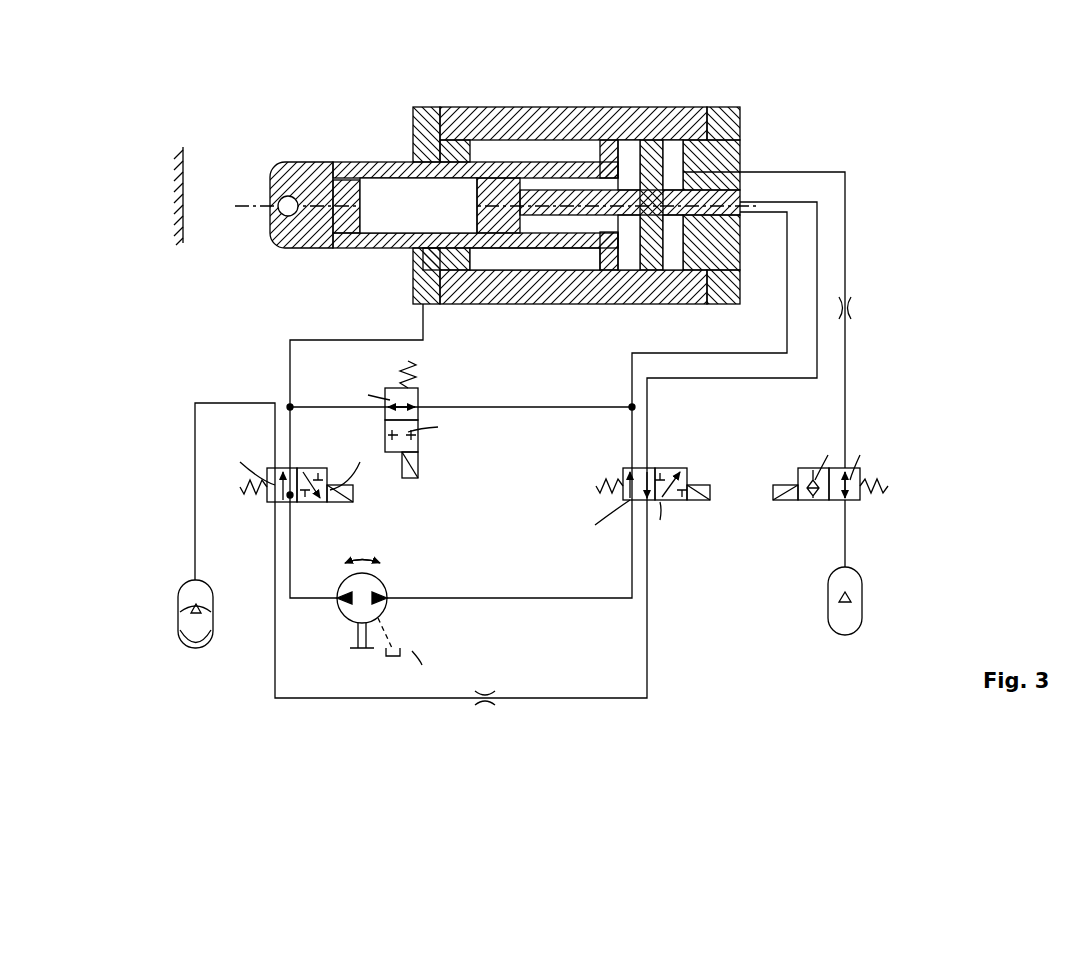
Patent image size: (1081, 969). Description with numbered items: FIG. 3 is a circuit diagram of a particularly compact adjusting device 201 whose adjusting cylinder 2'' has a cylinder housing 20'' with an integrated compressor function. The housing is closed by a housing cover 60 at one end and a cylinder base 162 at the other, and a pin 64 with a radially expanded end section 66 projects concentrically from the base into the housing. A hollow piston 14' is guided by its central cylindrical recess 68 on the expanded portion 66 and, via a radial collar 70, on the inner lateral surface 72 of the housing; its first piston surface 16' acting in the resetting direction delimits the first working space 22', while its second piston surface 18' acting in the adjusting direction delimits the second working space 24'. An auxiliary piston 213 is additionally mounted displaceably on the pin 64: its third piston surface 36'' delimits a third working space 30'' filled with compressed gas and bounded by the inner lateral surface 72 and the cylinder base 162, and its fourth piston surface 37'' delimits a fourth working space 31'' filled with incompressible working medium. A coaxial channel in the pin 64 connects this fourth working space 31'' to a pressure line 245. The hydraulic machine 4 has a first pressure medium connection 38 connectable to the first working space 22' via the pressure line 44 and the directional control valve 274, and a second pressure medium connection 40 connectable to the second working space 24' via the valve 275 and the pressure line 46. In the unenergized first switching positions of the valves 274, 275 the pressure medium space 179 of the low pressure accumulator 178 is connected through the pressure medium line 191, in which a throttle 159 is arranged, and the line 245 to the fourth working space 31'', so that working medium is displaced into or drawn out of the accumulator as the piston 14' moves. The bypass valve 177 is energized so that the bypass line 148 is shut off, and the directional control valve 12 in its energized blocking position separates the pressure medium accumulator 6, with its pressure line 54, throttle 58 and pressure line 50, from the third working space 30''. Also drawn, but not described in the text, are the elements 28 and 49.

The adjusting cylinder 2'' is at (540, 183).
The cylinder housing 20'' is at (570, 193).
The fixed support 28 is at (192, 168).
The central cylindrical recess 68 is at (380, 178).
The housing cover 60 is at (428, 112).
The radially expanded end section 66 is at (495, 160).
The first working space 22' is at (505, 185).
The first piston surface 16' is at (599, 164).
The fourth working space 31'' is at (627, 120).
The pin 64 is at (675, 190).
The cylinder base 162 is at (735, 130).
The adjusting device 201 is at (533, 377).
The pressure line 50 is at (786, 172).
The second working space 24' is at (418, 205).
The hollow piston 14' is at (315, 231).
The second piston surface 18' is at (446, 253).
The pressure line 44 is at (310, 338).
The inner lateral surface 72 is at (520, 266).
The radial collar 70 is at (580, 275).
The fourth piston surface 37'' is at (613, 291).
The auxiliary piston 213 is at (653, 285).
The third working space 30'' is at (685, 279).
The third piston surface 36'' is at (727, 238).
The pressure line 46 is at (787, 247).
The pressure line 245 is at (817, 275).
The throttle 58 is at (851, 312).
The bypass valve 177 is at (424, 398).
The bypass line 148 is at (510, 410).
The directional control valve 274 is at (297, 465).
The directional control valve 275 is at (650, 465).
The directional control valve 12 is at (873, 465).
The solenoid actuator 49 is at (353, 497).
The pressure medium space 179 is at (186, 590).
The low pressure accumulator 178 is at (212, 645).
The hydraulic machine 4 is at (361, 610).
The first pressure medium connection 38 is at (342, 592).
The second pressure medium connection 40 is at (385, 592).
The throttle 159 is at (485, 692).
The pressure medium line 191 is at (540, 695).
The pressure medium accumulator 6 is at (863, 605).
The pressure line 54 is at (848, 528).